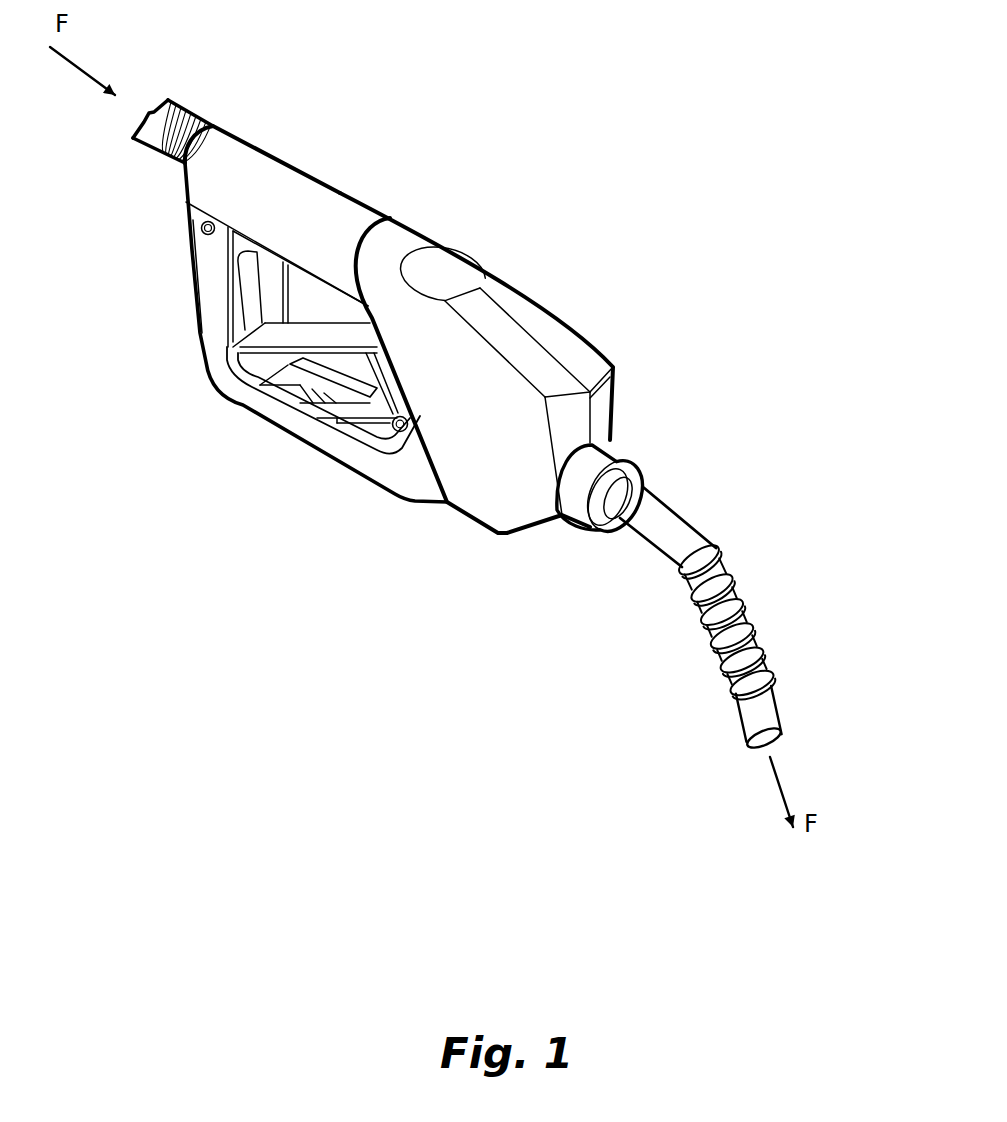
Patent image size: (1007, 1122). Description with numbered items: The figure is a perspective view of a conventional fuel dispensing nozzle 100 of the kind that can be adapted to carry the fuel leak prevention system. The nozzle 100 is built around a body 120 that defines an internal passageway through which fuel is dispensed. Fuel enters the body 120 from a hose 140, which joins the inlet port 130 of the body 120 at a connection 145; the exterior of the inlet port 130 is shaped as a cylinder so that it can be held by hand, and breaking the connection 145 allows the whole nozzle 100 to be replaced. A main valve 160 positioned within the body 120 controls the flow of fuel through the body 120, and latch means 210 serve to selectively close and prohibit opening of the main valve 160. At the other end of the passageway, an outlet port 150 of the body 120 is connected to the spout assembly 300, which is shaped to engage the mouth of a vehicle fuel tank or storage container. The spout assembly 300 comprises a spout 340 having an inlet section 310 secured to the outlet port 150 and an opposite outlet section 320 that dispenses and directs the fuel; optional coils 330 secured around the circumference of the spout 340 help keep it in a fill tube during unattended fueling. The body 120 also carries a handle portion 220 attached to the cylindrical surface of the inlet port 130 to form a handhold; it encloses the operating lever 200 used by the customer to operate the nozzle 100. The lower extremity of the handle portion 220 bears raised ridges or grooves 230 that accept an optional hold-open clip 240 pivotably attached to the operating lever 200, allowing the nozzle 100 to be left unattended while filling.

The nozzle 100 is at (443, 116).
The body 120 is at (605, 268).
The inlet port 130 is at (266, 201).
The hose 140 is at (184, 104).
The connection 145 is at (216, 128).
The outlet port 150 is at (620, 452).
The main valve 160 is at (443, 281).
The operating lever 200 is at (300, 354).
The latch means 210 is at (353, 493).
The handle portion 220 is at (210, 327).
The raised ridges or grooves 230 is at (282, 383).
The hold-open clip 240 is at (349, 427).
The spout assembly 300 is at (837, 605).
The inlet section 310 is at (645, 486).
The outlet section 320 is at (787, 727).
The coils 330 is at (719, 547).
The spout 340 is at (670, 539).